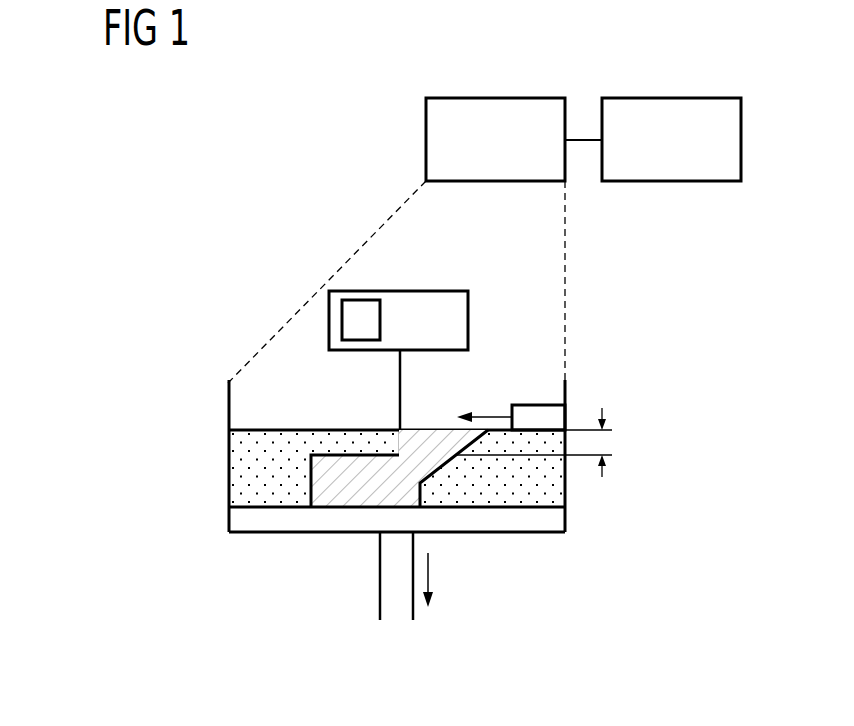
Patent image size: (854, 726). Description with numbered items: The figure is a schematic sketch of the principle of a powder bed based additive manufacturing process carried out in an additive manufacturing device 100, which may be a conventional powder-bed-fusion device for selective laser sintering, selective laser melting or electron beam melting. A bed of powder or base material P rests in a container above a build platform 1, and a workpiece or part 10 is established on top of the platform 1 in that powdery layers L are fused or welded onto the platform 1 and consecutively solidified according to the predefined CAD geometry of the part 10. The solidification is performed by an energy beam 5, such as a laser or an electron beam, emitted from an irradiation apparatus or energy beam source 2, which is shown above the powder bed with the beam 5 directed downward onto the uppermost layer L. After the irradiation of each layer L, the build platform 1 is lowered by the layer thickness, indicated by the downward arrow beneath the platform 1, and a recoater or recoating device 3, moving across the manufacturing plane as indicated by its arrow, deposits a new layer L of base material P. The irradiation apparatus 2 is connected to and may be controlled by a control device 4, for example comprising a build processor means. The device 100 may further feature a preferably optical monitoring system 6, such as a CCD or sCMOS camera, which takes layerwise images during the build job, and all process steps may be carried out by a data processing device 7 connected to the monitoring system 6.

The additive manufacturing device 100 is at (324, 156).
The build platform 1 is at (235, 518).
The irradiation apparatus 2 is at (329, 301).
The recoater 3 is at (534, 413).
The control device 4 is at (354, 320).
The energy beam 5 is at (400, 392).
The monitoring system 6 is at (484, 97).
The data processing device 7 is at (670, 97).
The part 10 is at (355, 495).
The powder P is at (235, 461).
The powdery layer L is at (603, 443).